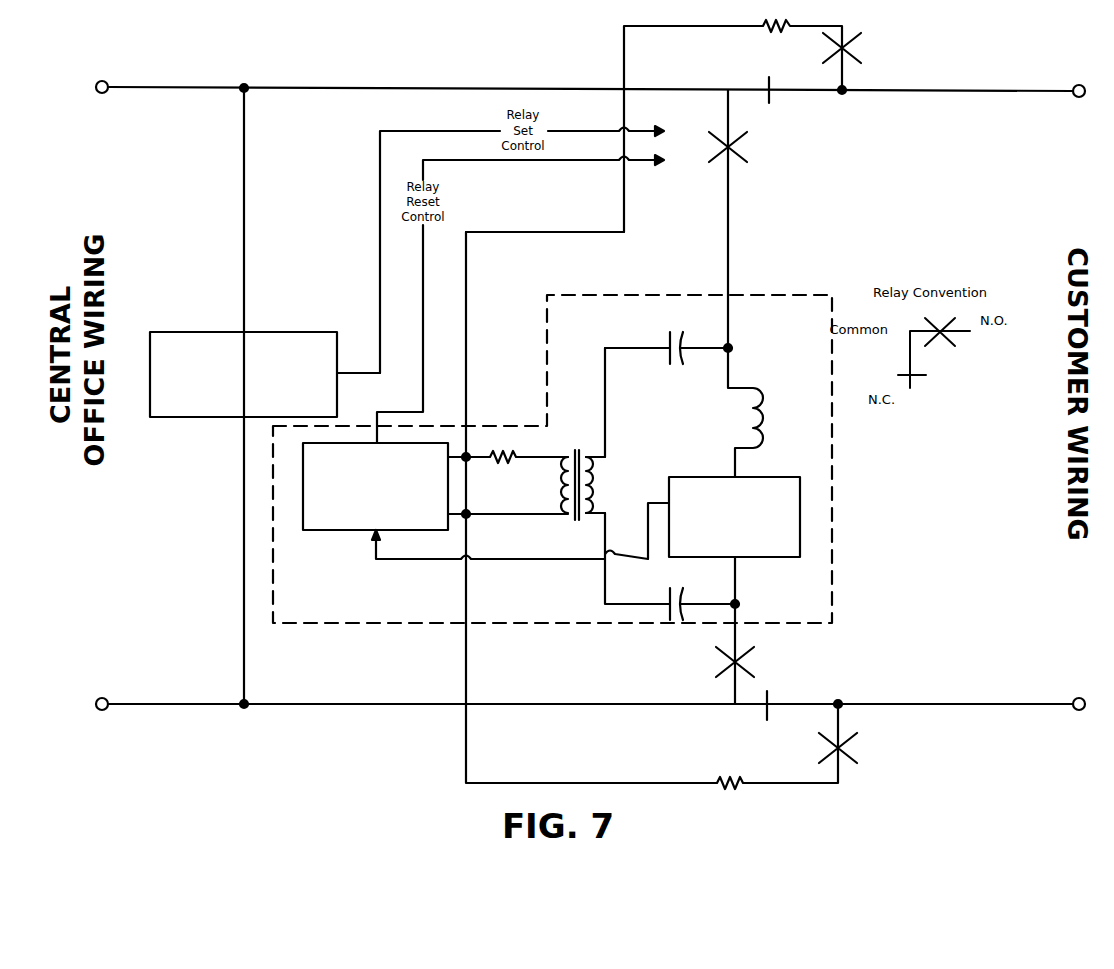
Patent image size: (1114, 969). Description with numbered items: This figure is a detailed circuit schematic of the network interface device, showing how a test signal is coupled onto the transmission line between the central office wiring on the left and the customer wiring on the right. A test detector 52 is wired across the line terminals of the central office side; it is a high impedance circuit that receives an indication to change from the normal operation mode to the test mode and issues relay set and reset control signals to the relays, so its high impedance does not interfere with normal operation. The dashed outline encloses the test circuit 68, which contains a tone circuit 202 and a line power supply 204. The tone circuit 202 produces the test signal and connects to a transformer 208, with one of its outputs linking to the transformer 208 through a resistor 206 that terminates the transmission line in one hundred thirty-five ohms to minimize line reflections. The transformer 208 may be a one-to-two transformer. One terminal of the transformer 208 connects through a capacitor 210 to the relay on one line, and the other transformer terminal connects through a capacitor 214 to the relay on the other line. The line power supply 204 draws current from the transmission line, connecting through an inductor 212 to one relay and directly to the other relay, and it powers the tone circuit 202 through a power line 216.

The test detector 52 is at (243, 374).
The test circuit 68 is at (544, 312).
The tone circuit 202 is at (375, 486).
The line power supply 204 is at (734, 517).
The resistor 206 is at (519, 457).
The transformer 208 is at (590, 497).
The capacitor 210 is at (668, 345).
The inductor 212 is at (758, 410).
The capacitor 214 is at (668, 602).
The power line 216 is at (528, 559).